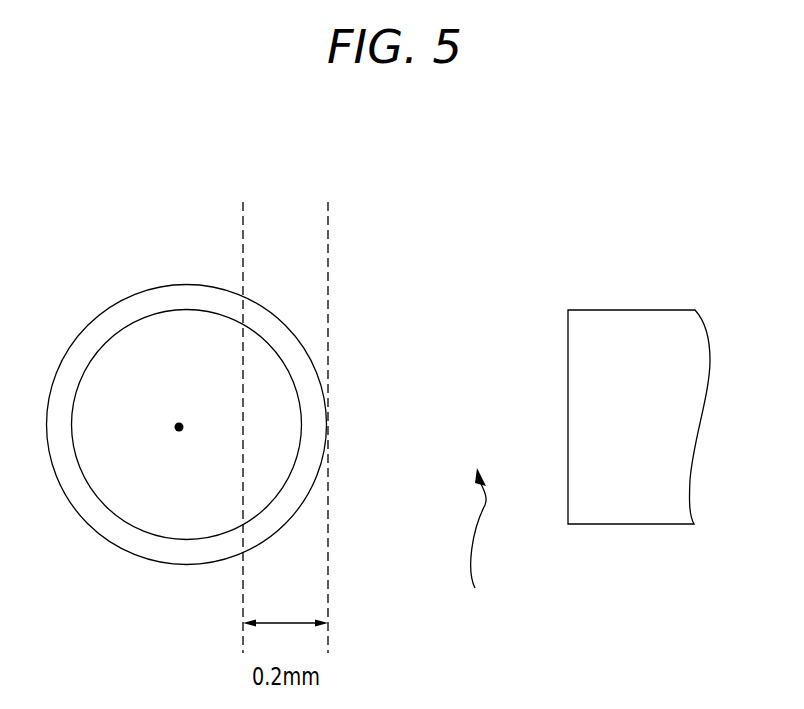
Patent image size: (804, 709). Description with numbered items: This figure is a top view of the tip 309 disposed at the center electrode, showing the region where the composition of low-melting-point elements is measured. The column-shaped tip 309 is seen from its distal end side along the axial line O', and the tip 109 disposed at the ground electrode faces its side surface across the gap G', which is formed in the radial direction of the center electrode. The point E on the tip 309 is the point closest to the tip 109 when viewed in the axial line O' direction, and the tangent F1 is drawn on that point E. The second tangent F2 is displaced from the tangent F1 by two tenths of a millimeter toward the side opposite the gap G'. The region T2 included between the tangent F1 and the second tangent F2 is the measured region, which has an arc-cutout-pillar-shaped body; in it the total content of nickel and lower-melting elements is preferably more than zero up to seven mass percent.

The tip 309 is at (108, 542).
The tip 109 is at (630, 505).
The axial line O' is at (163, 426).
The point E is at (355, 437).
The tangent F1 is at (328, 409).
The second tangent F2 is at (244, 409).
The region T2 is at (283, 388).
The gap G' is at (476, 545).